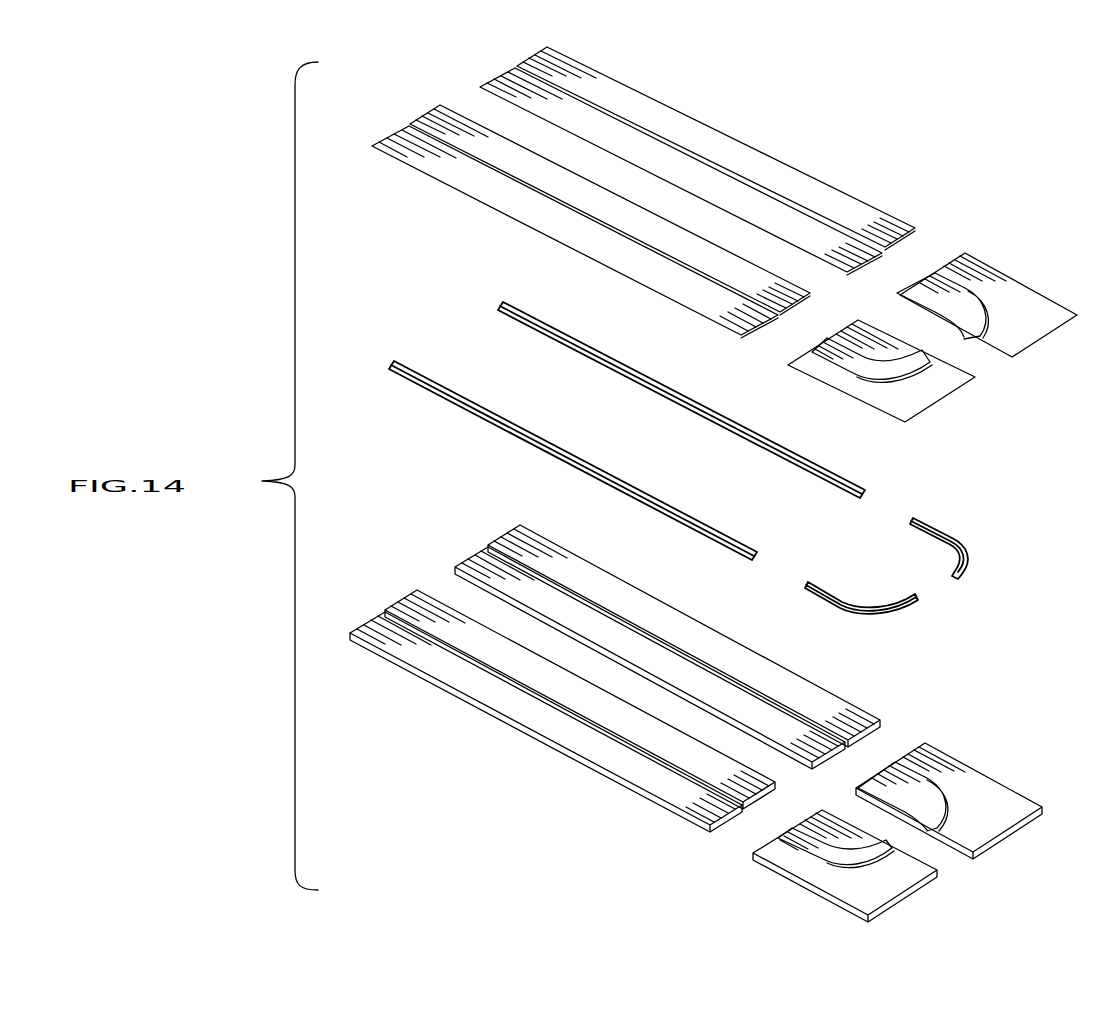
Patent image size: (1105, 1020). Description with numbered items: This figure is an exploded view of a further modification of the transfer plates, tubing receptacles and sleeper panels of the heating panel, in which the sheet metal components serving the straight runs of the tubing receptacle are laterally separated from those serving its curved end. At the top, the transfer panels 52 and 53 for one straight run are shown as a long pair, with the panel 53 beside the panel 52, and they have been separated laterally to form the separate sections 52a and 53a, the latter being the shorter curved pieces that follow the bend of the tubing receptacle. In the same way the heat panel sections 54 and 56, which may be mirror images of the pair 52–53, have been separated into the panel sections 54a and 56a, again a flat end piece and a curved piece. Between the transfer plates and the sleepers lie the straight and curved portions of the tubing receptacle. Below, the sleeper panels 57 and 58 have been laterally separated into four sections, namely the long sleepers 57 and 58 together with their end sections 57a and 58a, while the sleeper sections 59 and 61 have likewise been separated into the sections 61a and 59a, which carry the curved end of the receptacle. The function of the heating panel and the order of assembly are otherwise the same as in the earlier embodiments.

The transfer panel 52 is at (768, 160).
The transfer panel 53 is at (760, 215).
The heat panel section 54 is at (677, 290).
The heat panel section 56 is at (618, 198).
The separate section 52a is at (1018, 290).
The separate section 53a is at (923, 300).
The panel section 54a is at (895, 400).
The panel section 56a is at (920, 353).
The sleeper panel 57 is at (760, 665).
The sleeper panel 58 is at (757, 725).
The sleeper section 59 is at (605, 768).
The sleeper section 61 is at (618, 702).
The sleeper section 57a is at (960, 768).
The sleeper section 58a is at (883, 778).
The sleeper section 59a is at (822, 877).
The sleeper section 61a is at (880, 843).